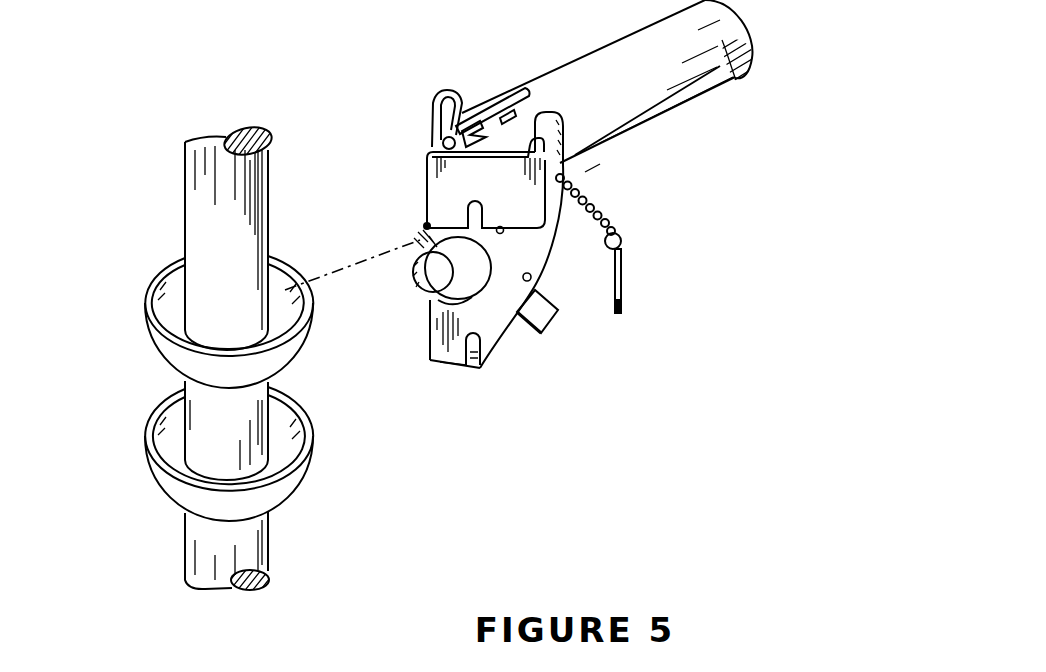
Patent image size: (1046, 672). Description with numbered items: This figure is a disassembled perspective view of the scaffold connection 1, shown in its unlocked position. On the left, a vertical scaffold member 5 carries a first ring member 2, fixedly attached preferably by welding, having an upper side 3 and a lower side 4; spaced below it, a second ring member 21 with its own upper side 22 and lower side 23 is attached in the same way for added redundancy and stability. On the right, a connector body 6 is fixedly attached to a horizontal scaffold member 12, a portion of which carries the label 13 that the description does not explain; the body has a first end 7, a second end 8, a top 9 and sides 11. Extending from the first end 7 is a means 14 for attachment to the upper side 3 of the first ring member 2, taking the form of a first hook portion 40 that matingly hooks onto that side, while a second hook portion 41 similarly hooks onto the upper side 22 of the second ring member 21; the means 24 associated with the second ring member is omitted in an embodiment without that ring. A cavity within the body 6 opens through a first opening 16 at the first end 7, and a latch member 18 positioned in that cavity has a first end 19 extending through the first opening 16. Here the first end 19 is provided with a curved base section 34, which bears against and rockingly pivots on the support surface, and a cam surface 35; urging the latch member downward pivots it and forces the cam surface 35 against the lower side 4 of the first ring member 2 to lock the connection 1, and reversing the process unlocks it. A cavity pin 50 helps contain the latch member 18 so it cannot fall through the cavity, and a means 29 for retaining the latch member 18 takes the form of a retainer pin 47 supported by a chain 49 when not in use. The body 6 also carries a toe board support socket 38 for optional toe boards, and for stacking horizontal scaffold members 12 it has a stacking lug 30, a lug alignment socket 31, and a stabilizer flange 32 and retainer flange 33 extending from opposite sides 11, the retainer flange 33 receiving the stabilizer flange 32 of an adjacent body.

The scaffold connection 1 is at (538, 237).
The first ring member 2 is at (175, 307).
The upper side 3 is at (178, 283).
The lower side 4 is at (140, 346).
The vertical scaffold member 5 is at (258, 540).
The connector body 6 is at (501, 186).
The first end 7 is at (443, 360).
The second end 8 is at (539, 240).
The top 9 is at (438, 75).
The sides 11 is at (540, 258).
The horizontal scaffold member 12 is at (688, 100).
The handle 13 is at (612, 81).
The means for attachment 14 is at (417, 244).
The first opening 16 is at (441, 285).
The latch member 18 is at (427, 354).
The first end 19 is at (417, 297).
The second ring member 21 is at (174, 460).
The upper side 22 is at (178, 440).
The lower side 23 is at (152, 503).
The means for attachment to second ring member 24 is at (438, 378).
The means for retaining latch member 29 is at (655, 276).
The stacking lugs 30 is at (480, 366).
The lug alignment sockets 31 is at (515, 92).
The stabilizer flange 32 is at (438, 96).
The retainer flange 33 is at (593, 152).
The curved base section 34 is at (463, 300).
The cam surface 35 is at (427, 224).
The toe board support socket 38 is at (435, 144).
The first hook portion 40 is at (437, 176).
The second hook portion 41 is at (428, 373).
The retainer pin 47 is at (620, 268).
The chain 49 is at (614, 216).
The cavity pin 50 is at (502, 226).